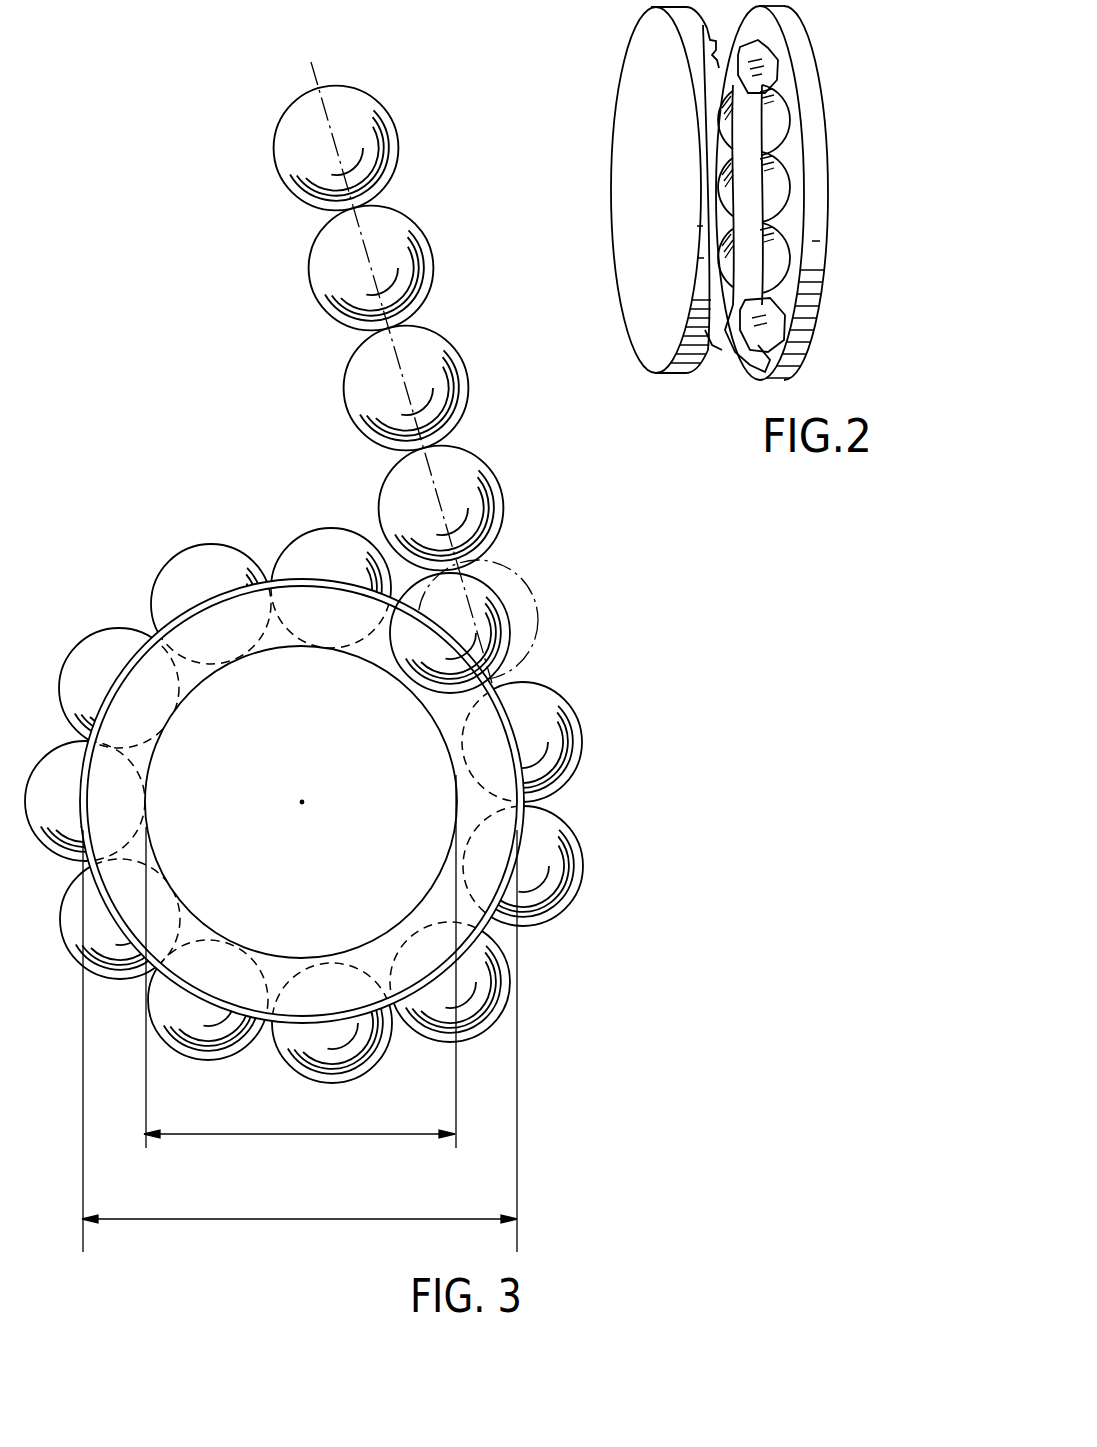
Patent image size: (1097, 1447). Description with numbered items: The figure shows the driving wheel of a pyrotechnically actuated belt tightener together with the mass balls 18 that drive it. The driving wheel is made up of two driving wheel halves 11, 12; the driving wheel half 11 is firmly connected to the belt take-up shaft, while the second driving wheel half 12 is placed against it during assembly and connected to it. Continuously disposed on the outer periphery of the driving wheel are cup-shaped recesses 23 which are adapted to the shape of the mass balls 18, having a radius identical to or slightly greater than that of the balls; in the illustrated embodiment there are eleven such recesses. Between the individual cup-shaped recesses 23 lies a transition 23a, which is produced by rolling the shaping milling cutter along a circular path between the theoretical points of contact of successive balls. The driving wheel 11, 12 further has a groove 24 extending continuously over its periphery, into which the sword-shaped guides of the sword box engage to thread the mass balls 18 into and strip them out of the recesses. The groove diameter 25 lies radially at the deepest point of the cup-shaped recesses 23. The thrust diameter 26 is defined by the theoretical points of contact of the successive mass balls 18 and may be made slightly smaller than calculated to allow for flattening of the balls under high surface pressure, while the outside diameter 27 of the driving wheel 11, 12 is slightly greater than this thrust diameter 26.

In FIG. 2, the driving wheel half 11 is at (826, 189).
In FIG. 2, the driving wheel half 12 is at (634, 128).
In FIG. 3, the mass balls 18 is at (504, 498).
In FIG. 2, the cup-shaped recesses 23 is at (790, 268).
In FIG. 3, the cup-shaped recesses 23 is at (480, 855).
In FIG. 2, the transition 23a is at (793, 143).
In FIG. 2, the groove 24 is at (726, 348).
In FIG. 3, the groove diameter 25 is at (329, 1136).
In FIG. 3, the thrust diameter 26 is at (363, 1221).
In FIG. 3, the outside diameter 27 is at (523, 740).